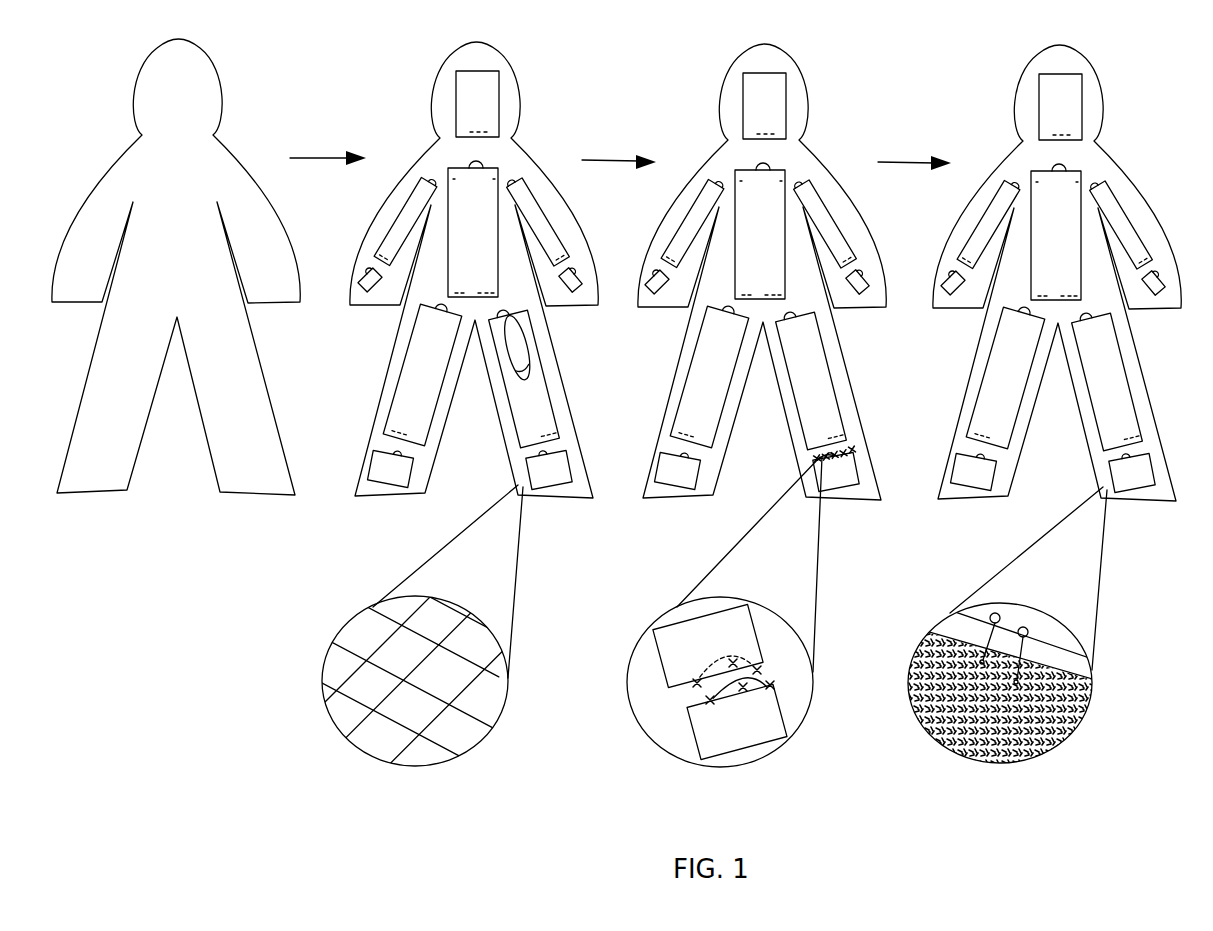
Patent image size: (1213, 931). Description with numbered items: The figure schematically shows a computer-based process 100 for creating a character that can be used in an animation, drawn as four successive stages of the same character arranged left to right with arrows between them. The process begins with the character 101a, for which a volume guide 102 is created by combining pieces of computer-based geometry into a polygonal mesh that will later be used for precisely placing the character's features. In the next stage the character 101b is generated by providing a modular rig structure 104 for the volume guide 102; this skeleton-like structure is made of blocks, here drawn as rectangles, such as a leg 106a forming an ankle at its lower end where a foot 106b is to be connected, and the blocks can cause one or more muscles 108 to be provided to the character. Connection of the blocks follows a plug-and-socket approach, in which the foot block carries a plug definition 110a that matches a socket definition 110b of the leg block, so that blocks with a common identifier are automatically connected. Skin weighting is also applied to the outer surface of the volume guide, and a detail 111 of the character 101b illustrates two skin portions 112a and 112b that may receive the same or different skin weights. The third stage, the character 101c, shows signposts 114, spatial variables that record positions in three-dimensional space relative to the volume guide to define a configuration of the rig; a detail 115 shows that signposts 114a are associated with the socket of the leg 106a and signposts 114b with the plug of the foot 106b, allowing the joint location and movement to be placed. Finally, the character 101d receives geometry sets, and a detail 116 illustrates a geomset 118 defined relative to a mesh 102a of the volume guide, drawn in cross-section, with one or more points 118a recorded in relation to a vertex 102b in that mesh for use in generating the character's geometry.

The computer-based process 100 is at (142, 850).
The character 101a is at (109, 58).
The character 101b is at (394, 58).
The character 101c is at (692, 58).
The character 101d is at (996, 60).
The volume guide 102 is at (73, 495).
The mesh 102a is at (1087, 653).
The vertex 102b is at (988, 612).
The modular rig structure 104 is at (378, 325).
The leg 106a is at (543, 387).
The foot 106b is at (563, 455).
The muscle 108 is at (510, 386).
The plug definition 110a is at (384, 462).
The socket definition 110b is at (406, 418).
The detail 111 is at (333, 643).
The skin portion 112a is at (403, 680).
The skin portion 112b is at (373, 710).
The signposts 114 is at (880, 436).
The signposts 114a is at (691, 652).
The signposts 114b is at (721, 712).
The detail 115 is at (717, 599).
The detail 116 is at (1003, 604).
The geomset 118 is at (1024, 748).
The points 118a is at (940, 628).